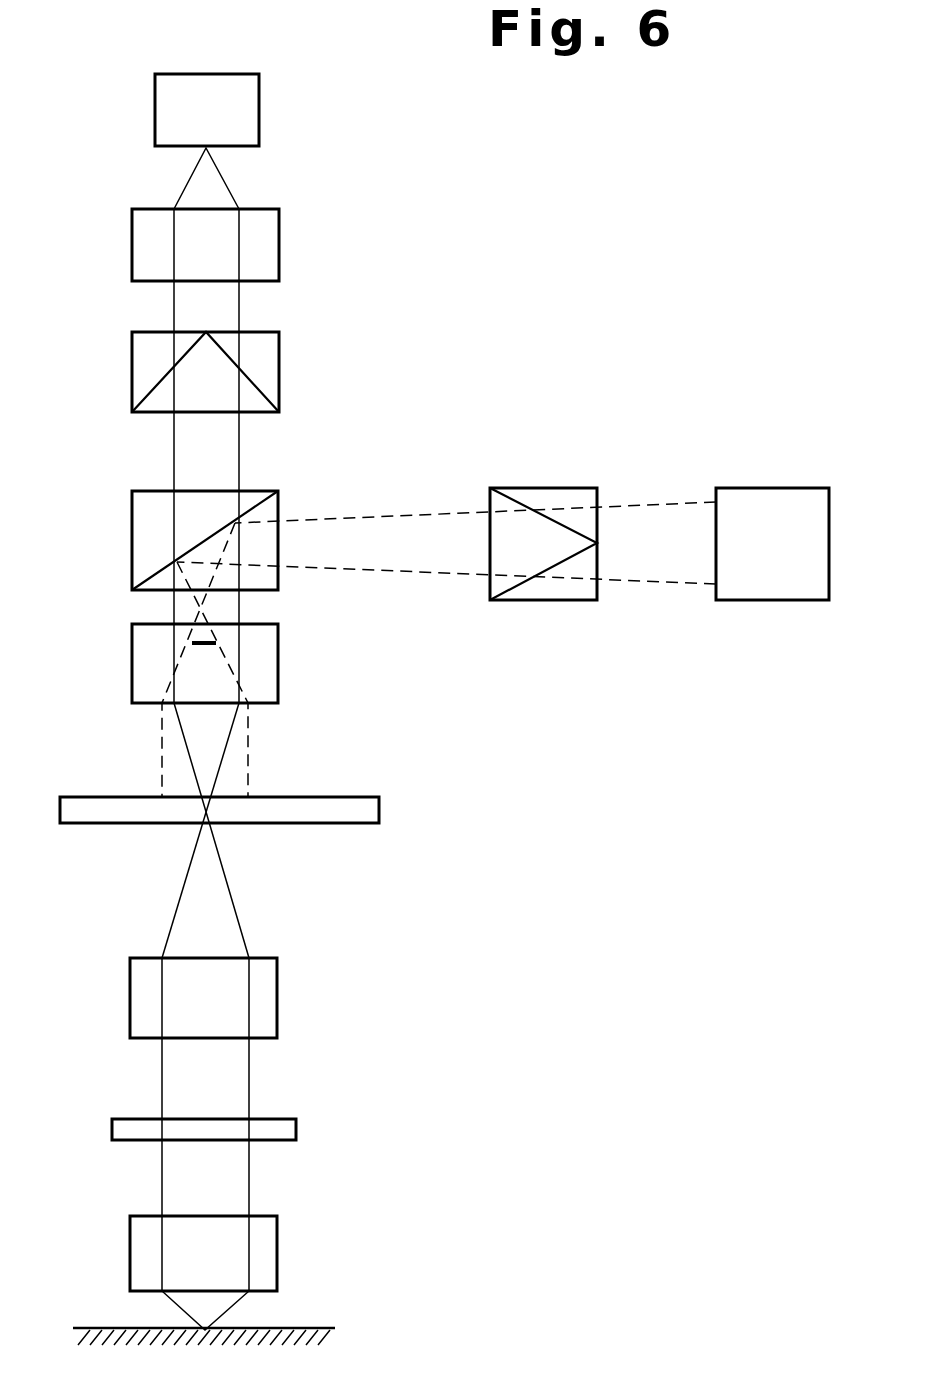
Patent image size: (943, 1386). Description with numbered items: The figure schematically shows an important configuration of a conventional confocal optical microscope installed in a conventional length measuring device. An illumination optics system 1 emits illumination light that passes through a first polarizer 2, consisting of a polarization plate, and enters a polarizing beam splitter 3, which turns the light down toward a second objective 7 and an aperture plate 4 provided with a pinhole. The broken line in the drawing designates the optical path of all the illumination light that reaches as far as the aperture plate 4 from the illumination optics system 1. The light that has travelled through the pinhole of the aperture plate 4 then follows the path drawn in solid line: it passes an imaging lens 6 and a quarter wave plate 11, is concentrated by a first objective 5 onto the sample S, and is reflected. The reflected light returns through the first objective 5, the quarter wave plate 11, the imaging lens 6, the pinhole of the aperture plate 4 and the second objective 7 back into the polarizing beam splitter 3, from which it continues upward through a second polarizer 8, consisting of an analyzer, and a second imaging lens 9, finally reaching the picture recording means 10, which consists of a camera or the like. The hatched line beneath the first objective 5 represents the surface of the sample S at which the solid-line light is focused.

The illumination optics system 1 is at (770, 488).
The first polarizer 2 is at (548, 488).
The polarizing beam splitter 3 is at (132, 510).
The aperture plate 4 is at (363, 797).
The first objective 5 is at (130, 1237).
The imaging lens 6 is at (277, 985).
The second objective 7 is at (132, 661).
The second polarizer 8 is at (279, 362).
The second imaging lens 9 is at (279, 228).
The picture recording means 10 is at (259, 93).
The quarter wave plate 11 is at (296, 1122).
The sample S is at (290, 1328).